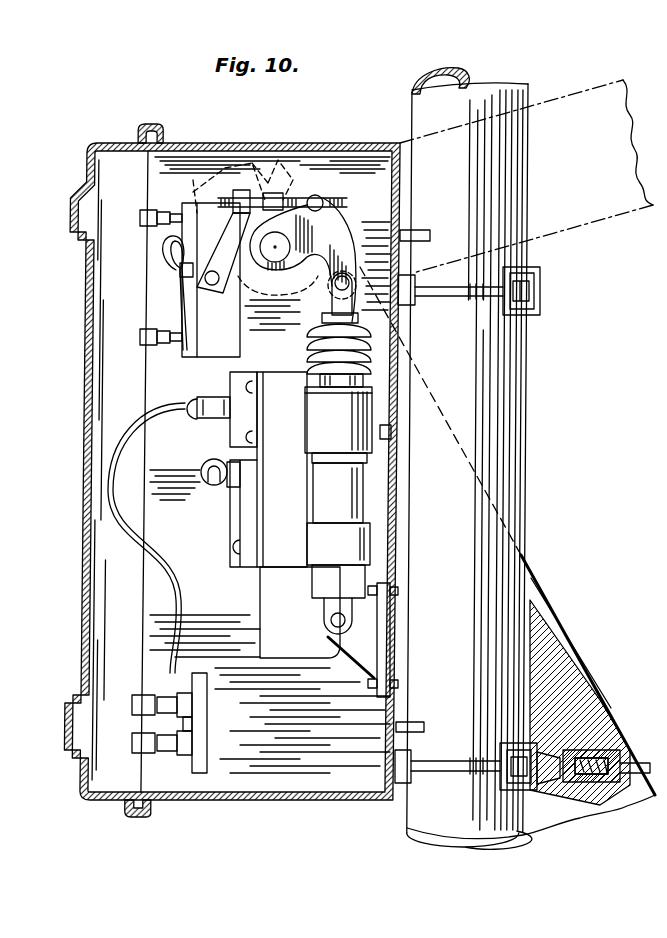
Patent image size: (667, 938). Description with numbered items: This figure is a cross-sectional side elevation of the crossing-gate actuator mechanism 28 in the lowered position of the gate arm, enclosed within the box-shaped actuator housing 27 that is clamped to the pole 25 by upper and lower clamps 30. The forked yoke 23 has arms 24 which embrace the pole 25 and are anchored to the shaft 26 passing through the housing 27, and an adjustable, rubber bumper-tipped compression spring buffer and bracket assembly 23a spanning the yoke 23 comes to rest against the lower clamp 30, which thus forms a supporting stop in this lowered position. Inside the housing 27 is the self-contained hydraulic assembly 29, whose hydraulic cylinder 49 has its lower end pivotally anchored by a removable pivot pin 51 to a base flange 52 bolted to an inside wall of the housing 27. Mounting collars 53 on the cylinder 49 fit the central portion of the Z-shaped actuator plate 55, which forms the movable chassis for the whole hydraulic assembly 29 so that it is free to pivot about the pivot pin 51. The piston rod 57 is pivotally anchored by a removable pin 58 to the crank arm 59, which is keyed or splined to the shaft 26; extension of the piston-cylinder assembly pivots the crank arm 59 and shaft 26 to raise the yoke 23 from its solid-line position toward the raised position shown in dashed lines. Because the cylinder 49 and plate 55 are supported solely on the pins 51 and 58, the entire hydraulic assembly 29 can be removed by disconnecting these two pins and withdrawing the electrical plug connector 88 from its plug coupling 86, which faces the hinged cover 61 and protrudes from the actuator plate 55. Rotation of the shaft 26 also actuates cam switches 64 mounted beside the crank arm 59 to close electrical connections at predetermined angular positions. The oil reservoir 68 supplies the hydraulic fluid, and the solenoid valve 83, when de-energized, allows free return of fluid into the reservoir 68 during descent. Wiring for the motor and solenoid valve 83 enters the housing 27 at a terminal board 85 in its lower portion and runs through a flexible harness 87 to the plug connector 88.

The forked yoke 23 is at (577, 630).
The compression spring buffer and bracket assembly 23a is at (600, 800).
The arms 24 is at (580, 690).
The pole 25 is at (490, 84).
The shaft 26 is at (282, 242).
The actuator housing 27 is at (296, 120).
The actuator mechanism 28 is at (130, 594).
The self-contained hydraulic assembly 29 is at (231, 512).
The clamps 30 is at (542, 296).
The hydraulic cylinder 49 is at (320, 496).
The pivot pin 51 is at (334, 622).
The base flange 52 is at (370, 672).
The mounting collars 53 is at (390, 436).
The Z-shaped actuator plate 55 is at (297, 463).
The piston rod 57 is at (354, 303).
The pin 58 is at (336, 283).
The crank arm 59 is at (290, 220).
The hinged cover 61 is at (88, 414).
The cam switches 64 is at (162, 284).
The oil reservoir 68 is at (270, 594).
The solenoid valve 83 is at (212, 464).
The terminal board 85 is at (207, 706).
The plug coupling 86 is at (218, 390).
The flexible harness 87 is at (178, 618).
The plug connector 88 is at (188, 402).